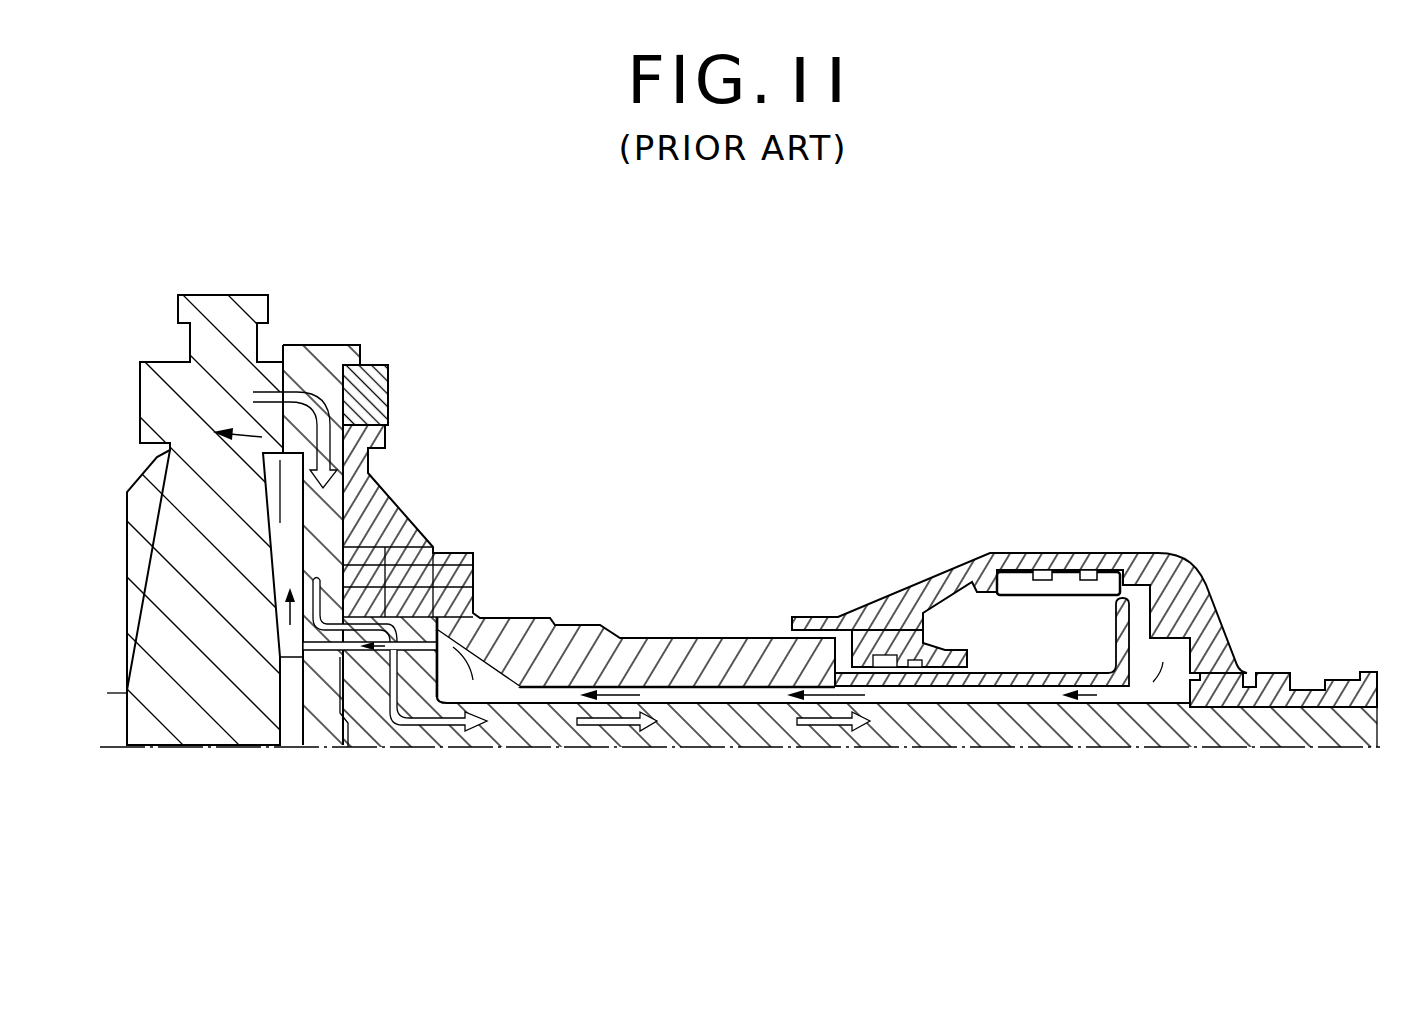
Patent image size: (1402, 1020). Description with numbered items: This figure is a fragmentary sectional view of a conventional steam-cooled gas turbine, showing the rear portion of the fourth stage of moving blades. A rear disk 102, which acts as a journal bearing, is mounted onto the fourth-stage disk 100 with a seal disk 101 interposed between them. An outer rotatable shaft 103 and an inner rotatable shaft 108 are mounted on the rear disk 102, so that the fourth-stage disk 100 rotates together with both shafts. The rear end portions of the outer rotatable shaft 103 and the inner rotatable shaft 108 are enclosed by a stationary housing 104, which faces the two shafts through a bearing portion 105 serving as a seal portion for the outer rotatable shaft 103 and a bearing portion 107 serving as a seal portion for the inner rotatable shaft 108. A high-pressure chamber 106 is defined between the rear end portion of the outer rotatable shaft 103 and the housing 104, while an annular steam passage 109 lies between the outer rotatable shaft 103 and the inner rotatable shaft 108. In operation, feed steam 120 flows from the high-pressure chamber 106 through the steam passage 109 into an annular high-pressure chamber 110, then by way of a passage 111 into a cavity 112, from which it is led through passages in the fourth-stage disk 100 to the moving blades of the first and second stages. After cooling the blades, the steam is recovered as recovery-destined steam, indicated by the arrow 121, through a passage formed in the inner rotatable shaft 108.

The fourth-stage disk 100 is at (230, 296).
The seal disk 101 is at (320, 357).
The rear disk 102 is at (390, 392).
The outer rotatable shaft 103 is at (547, 617).
The stationary housing 104 is at (925, 578).
The bearing portion 105 is at (866, 615).
The high-pressure chamber 106 is at (993, 640).
The bearing portion 107 is at (1237, 690).
The inner rotatable shaft 108 is at (988, 738).
The annular steam passage 109 is at (907, 693).
The annular high-pressure chamber 110 is at (490, 683).
The passage 111 is at (320, 657).
The cavity 112 is at (285, 551).
The feed steam 120 is at (1103, 705).
The arrow 121 is at (602, 727).